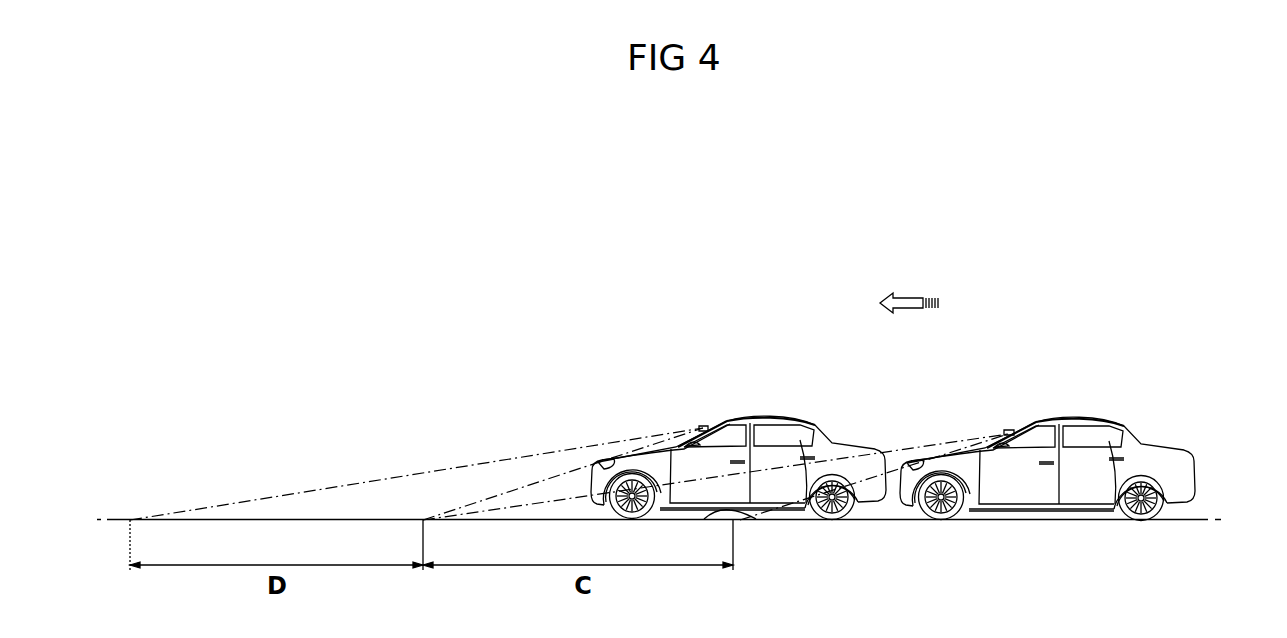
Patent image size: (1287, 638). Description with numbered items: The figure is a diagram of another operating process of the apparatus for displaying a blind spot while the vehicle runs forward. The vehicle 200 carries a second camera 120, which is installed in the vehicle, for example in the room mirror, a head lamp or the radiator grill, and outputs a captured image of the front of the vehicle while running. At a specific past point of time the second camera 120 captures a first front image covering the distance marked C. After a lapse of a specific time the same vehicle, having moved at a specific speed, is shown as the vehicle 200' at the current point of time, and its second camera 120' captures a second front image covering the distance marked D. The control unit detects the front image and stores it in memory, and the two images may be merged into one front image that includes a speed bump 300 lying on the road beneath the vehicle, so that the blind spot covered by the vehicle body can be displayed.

The second camera 120' is at (651, 395).
The vehicle 200' is at (738, 422).
The second camera 120 is at (1008, 388).
The vehicle 200 is at (1047, 439).
The speed bump 300 is at (735, 518).